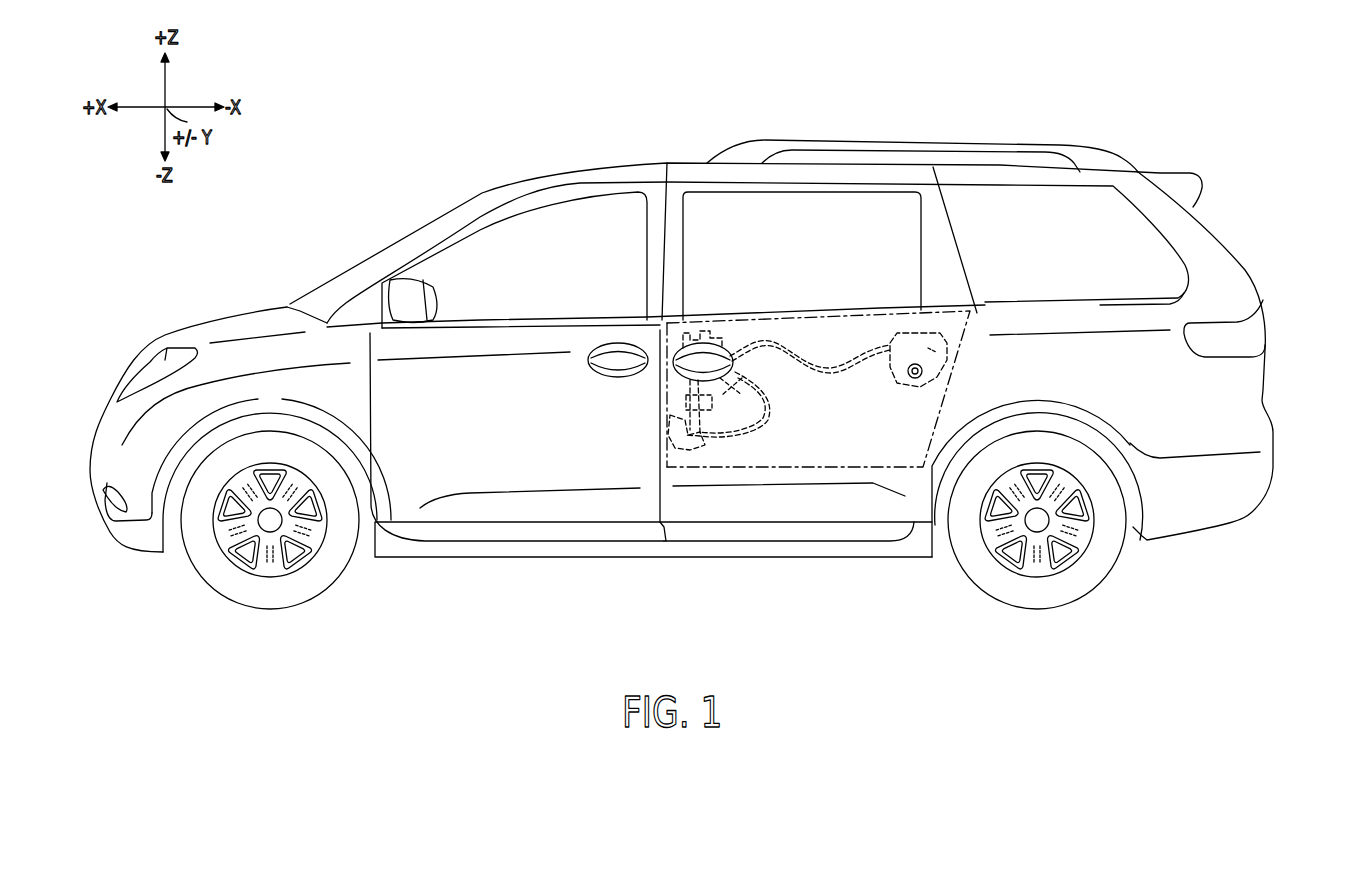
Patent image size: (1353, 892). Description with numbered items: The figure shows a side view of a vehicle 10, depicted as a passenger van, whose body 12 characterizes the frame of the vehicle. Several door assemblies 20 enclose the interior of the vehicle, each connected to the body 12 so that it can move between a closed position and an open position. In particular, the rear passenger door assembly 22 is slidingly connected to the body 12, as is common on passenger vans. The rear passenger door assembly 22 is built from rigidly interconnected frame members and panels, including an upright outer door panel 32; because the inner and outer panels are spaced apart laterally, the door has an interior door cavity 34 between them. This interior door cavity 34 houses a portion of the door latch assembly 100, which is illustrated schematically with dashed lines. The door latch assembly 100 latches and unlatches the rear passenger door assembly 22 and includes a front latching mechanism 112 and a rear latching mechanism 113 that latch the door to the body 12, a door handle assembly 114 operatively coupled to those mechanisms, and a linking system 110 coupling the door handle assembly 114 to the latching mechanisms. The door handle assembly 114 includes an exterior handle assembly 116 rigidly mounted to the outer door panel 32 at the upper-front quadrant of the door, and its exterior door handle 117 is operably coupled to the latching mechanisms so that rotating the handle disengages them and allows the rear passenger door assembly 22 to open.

The vehicle 10 is at (945, 105).
The body 12 is at (1266, 374).
The door assembly 20 is at (411, 545).
The rear passenger door assembly 22 is at (884, 545).
The outer door panel 32 is at (695, 513).
The interior door cavity 34 is at (668, 470).
The door latch assembly 100 is at (661, 324).
The linking system 110 is at (787, 416).
The front latching mechanism 112 is at (666, 440).
The rear latching mechanism 113 is at (950, 348).
The door handle assembly 114 is at (712, 322).
The exterior handle assembly 116 is at (670, 365).
The exterior door handle 117 is at (685, 325).